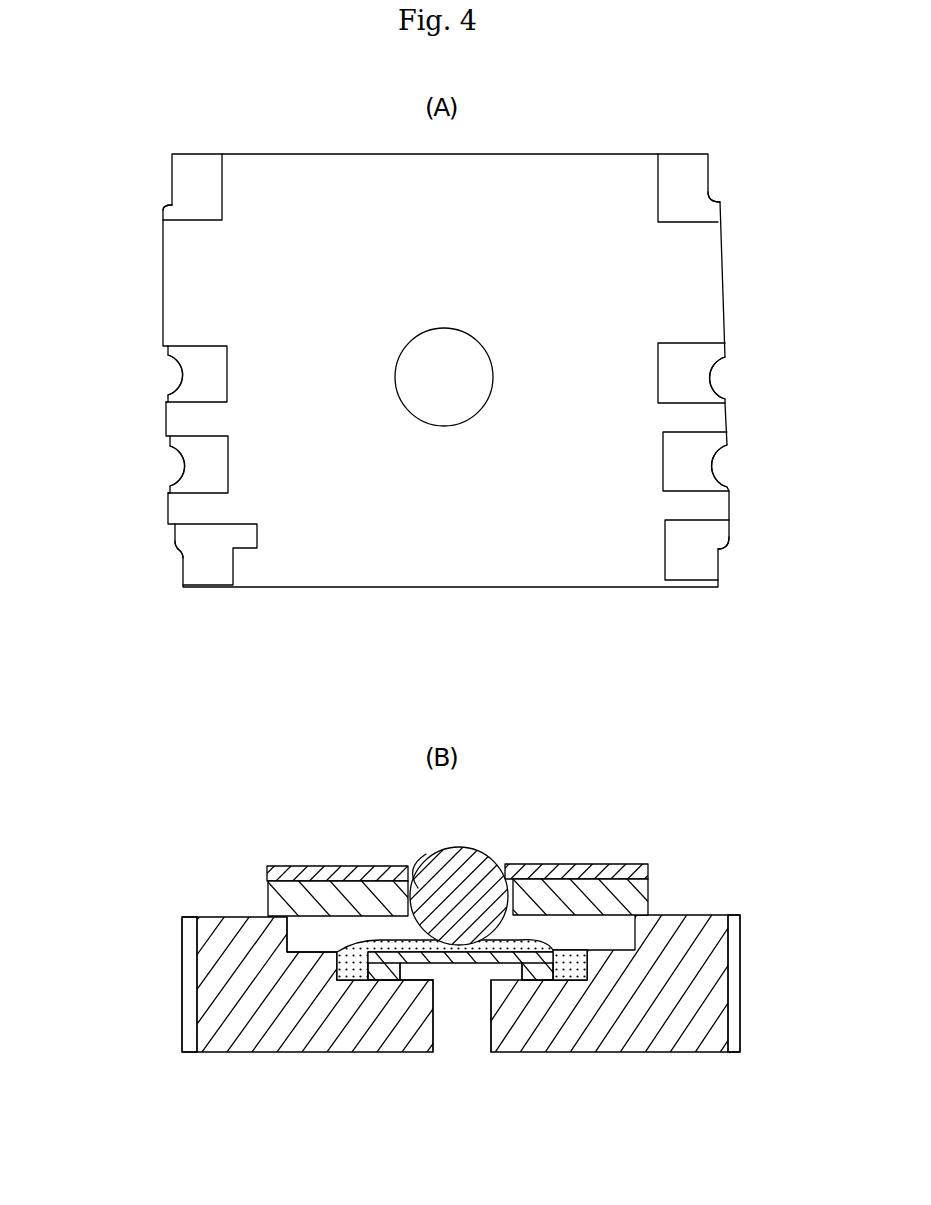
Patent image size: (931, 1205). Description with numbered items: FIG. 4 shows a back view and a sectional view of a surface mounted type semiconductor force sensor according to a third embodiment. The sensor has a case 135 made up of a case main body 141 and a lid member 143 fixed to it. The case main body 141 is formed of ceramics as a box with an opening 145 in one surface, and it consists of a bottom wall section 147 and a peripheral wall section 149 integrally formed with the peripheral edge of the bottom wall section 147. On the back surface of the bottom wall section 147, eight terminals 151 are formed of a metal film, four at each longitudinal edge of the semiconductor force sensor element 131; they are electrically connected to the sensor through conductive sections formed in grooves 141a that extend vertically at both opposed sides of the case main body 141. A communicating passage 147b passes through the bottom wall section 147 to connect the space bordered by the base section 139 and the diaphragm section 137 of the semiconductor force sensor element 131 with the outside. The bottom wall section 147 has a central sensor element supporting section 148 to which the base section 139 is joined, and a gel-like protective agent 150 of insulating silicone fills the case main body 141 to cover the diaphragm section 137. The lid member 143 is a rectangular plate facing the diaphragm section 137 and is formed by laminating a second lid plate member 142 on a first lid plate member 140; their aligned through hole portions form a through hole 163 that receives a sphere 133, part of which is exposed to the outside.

The groove 141a is at (167, 203).
The terminal 151 is at (178, 212).
The bottom wall section 147 is at (683, 296).
The communicating passage 147b is at (481, 402).
The semiconductor force sensor element 131 is at (381, 940).
The through hole 163 is at (424, 880).
The sphere 133 is at (460, 878).
The opening 145 is at (287, 927).
The second lid plate member 142 is at (551, 864).
The gel-like protective agent 150 is at (571, 966).
The lid member 143 is at (633, 908).
The first lid plate member 140 is at (624, 862).
The case 135 is at (681, 945).
The peripheral wall section 149 is at (218, 938).
The case main body 141 is at (707, 966).
The base section 139 is at (382, 968).
The sensor element supporting section 148 is at (418, 992).
The diaphragm section 137 is at (452, 958).